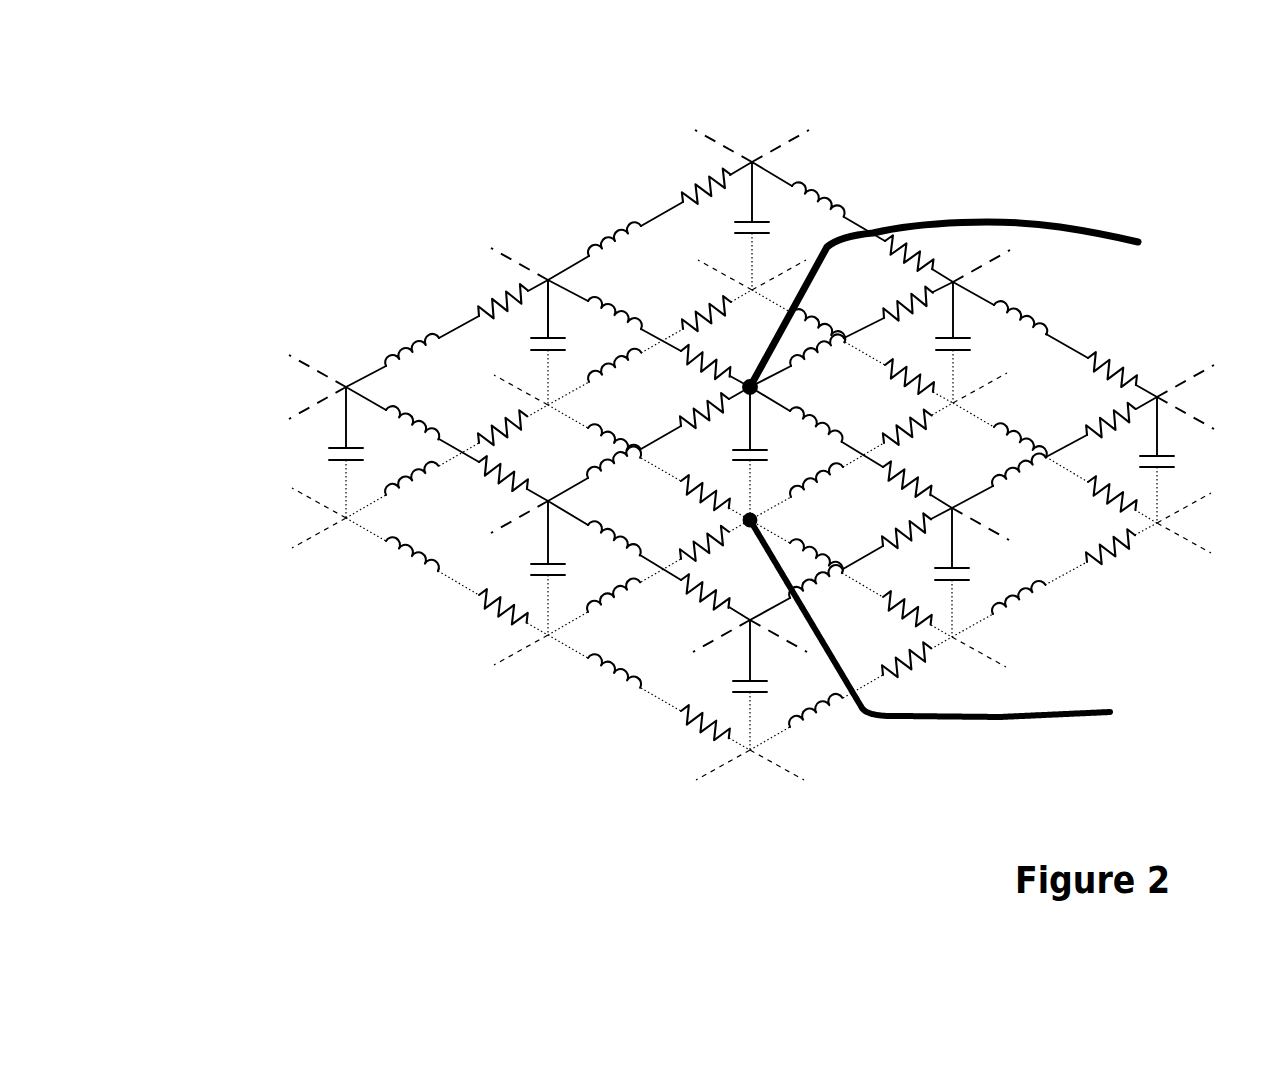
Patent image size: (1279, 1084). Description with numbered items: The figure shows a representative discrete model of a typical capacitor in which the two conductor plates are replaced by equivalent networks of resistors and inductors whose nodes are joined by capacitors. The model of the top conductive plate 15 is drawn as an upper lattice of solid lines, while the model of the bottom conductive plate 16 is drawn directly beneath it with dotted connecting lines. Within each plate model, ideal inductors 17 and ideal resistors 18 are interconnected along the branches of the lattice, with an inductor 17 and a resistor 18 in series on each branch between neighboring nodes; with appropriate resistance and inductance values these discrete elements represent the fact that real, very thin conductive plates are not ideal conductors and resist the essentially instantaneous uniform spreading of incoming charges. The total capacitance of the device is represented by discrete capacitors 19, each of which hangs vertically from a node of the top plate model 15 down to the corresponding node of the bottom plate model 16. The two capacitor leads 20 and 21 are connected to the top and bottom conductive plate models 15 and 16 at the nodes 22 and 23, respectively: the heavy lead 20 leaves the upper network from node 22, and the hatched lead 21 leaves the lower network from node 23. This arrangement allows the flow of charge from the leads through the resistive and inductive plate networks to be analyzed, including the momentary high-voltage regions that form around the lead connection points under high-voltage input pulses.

The top conductive plate model 15 is at (322, 380).
The bottom conductive plate model 16 is at (322, 514).
The inductor 17 is at (398, 325).
The resistor 18 is at (488, 280).
The capacitor 19 is at (523, 352).
The capacitor lead 20 is at (1102, 223).
The capacitor lead 21 is at (1100, 715).
The node 22 is at (745, 372).
The node 23 is at (742, 538).